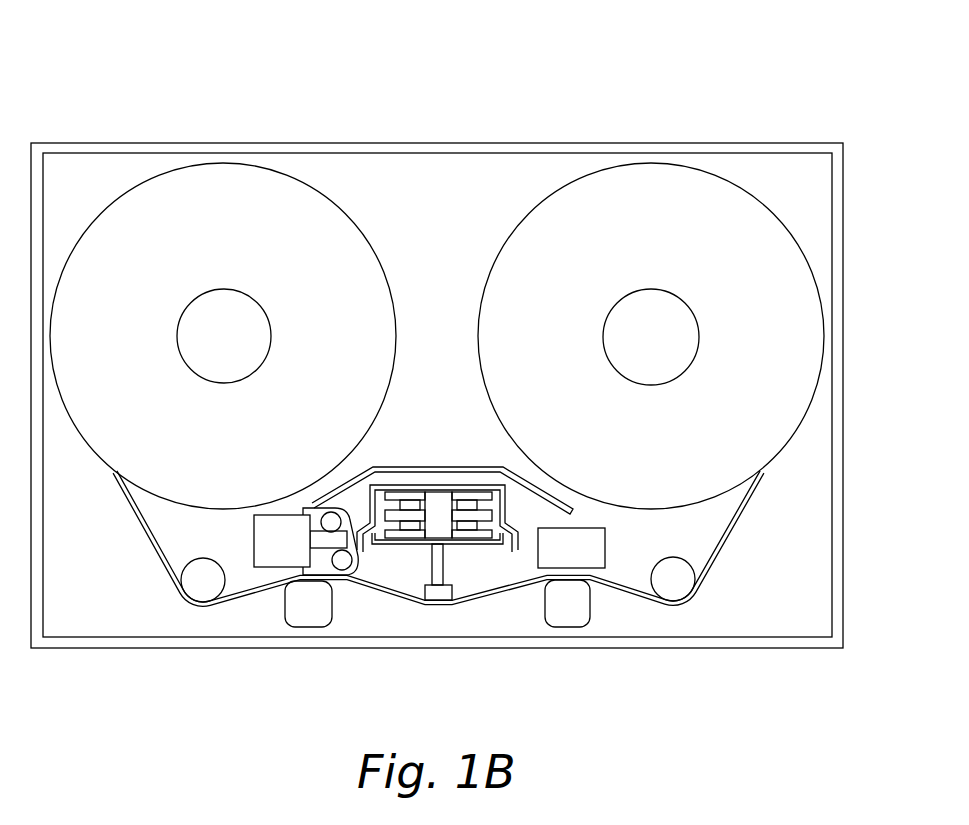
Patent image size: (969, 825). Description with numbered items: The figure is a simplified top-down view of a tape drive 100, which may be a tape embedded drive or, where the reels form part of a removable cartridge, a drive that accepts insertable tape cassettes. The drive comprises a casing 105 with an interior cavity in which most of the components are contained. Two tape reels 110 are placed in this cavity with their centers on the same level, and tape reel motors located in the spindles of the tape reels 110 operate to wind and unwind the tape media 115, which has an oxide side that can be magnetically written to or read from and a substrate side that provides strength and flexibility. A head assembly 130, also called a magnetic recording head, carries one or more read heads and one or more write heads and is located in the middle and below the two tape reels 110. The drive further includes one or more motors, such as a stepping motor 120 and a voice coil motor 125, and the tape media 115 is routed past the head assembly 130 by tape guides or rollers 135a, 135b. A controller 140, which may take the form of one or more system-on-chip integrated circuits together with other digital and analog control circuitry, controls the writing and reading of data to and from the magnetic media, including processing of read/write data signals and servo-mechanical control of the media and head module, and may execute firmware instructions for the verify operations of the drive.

The tape drive 100 is at (130, 66).
The casing 105 is at (437, 143).
The tape reel 110 is at (337, 219).
The tape media 115 is at (147, 533).
The stepping motor 120 is at (256, 536).
The voice coil motor 125 is at (400, 547).
The head assembly 130 is at (437, 603).
The tape guide/roller 135a is at (197, 581).
The tape guide/roller 135b is at (303, 605).
The controller 140 is at (453, 590).